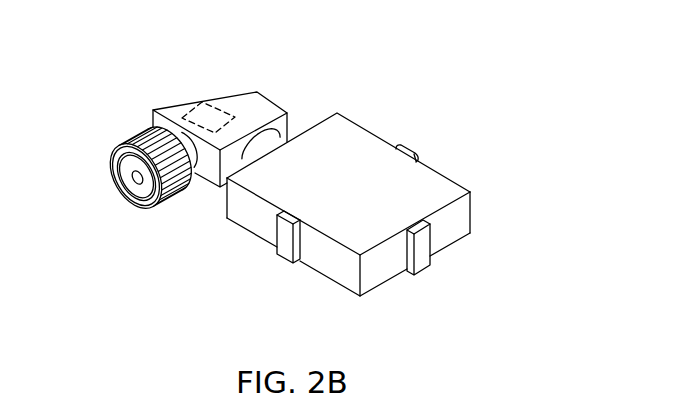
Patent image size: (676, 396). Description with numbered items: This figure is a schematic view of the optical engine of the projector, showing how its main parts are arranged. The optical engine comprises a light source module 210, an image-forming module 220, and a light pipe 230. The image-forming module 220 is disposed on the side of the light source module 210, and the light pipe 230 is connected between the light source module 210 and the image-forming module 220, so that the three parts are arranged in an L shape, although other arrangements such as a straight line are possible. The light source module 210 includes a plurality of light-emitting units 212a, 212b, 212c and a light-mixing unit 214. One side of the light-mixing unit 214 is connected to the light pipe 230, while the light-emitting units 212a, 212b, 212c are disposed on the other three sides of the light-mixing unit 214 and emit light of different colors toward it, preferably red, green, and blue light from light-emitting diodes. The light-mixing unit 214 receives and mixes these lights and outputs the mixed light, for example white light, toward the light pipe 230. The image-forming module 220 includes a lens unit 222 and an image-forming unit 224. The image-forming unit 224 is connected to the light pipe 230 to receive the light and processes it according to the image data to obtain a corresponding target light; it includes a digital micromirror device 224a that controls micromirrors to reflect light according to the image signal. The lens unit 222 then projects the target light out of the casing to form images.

The light source module 210 is at (436, 84).
The light-emitting unit 212a is at (405, 146).
The light-emitting unit 212b is at (422, 238).
The light-emitting unit 212c is at (333, 128).
The light-mixing unit 214 is at (427, 184).
The image-forming module 220 is at (90, 71).
The lens unit 222 is at (141, 133).
The image-forming unit 224 is at (187, 102).
The digital micromirror device 224a is at (213, 107).
The light pipe 230 is at (264, 143).